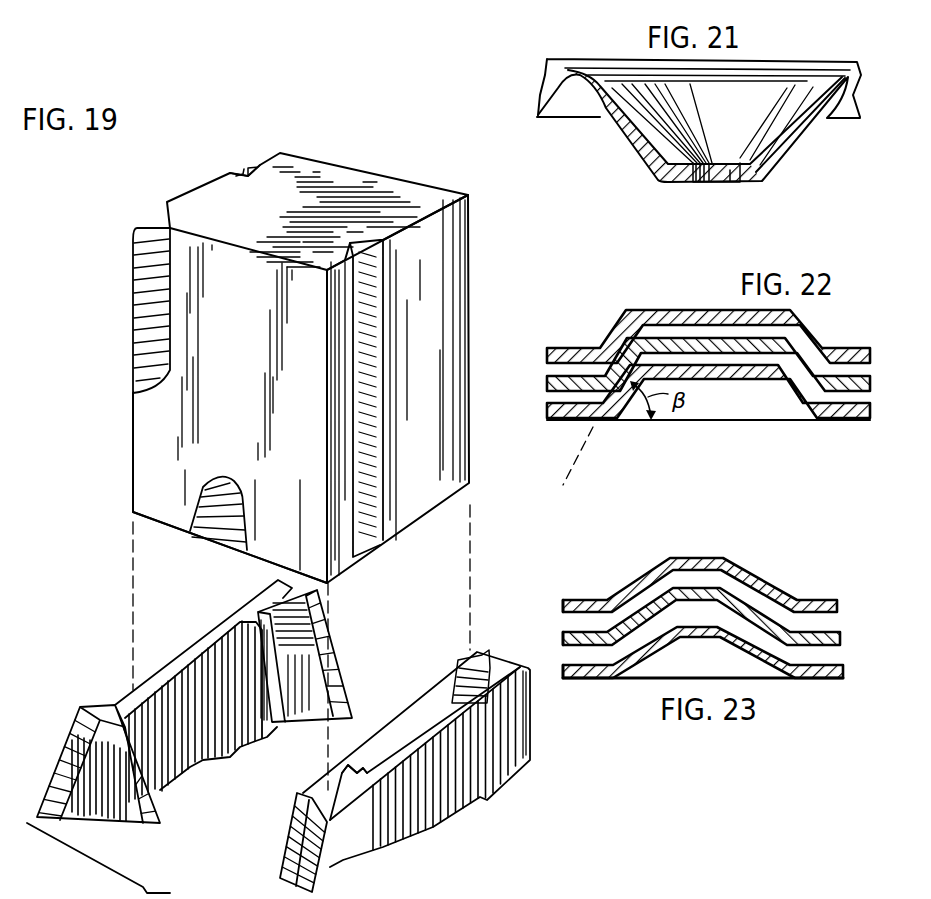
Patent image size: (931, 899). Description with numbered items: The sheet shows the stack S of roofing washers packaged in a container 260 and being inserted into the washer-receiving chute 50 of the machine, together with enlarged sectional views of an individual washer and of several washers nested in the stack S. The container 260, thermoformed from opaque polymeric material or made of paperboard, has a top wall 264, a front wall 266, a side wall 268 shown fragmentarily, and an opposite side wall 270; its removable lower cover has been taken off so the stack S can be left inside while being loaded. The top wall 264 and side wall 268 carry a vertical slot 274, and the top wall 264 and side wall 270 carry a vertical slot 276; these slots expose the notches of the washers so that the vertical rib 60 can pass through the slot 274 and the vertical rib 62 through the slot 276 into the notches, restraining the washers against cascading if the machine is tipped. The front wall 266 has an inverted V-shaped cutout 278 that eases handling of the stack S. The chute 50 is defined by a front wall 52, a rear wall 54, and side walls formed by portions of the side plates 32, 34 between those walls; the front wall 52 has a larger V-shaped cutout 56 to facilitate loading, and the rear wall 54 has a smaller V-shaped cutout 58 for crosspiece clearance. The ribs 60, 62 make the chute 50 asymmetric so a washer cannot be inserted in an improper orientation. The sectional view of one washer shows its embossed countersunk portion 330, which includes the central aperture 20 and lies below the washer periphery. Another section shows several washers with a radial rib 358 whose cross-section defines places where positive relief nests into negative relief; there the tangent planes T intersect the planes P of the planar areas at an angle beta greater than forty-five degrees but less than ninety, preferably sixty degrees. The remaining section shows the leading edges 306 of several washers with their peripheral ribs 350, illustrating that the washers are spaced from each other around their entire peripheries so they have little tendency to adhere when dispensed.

In FIG. 19, the container 260 is at (150, 433).
In FIG. 19, the top wall 264 is at (340, 182).
In FIG. 19, the front wall 266 is at (167, 507).
In FIG. 19, the side wall 268 is at (246, 173).
In FIG. 19, the side wall 270 is at (457, 332).
In FIG. 19, the vertical slot 274 is at (244, 167).
In FIG. 19, the vertical slot 276 is at (363, 550).
In FIG. 19, the inverted V-shaped cutout 278 is at (233, 517).
In FIG. 19, the washer-receiving chute 50 is at (191, 696).
In FIG. 19, the front wall 52 is at (113, 735).
In FIG. 19, the rear wall 54 is at (277, 612).
In FIG. 19, the V-shaped cutout 56 is at (249, 830).
In FIG. 19, the V-shaped cutout 58 is at (410, 642).
In FIG. 19, the vertical rib 60 is at (263, 650).
In FIG. 19, the vertical rib 62 is at (340, 780).
In FIG. 19, the side plate 32 is at (87, 780).
In FIG. 19, the side plate 34 is at (386, 771).
In FIG. 19, the stack S is at (133, 226).
In FIG. 21, the countersunk portion 330 is at (633, 137).
In FIG. 21, the central aperture 20 is at (708, 183).
In FIG. 22, the radial rib 358 is at (683, 278).
In FIG. 22, the plane P is at (722, 421).
In FIG. 22, the tangent plane T is at (598, 459).
In FIG. 23, the peripheral rib 350 is at (704, 630).
In FIG. 23, the leading edge 306 is at (560, 600).